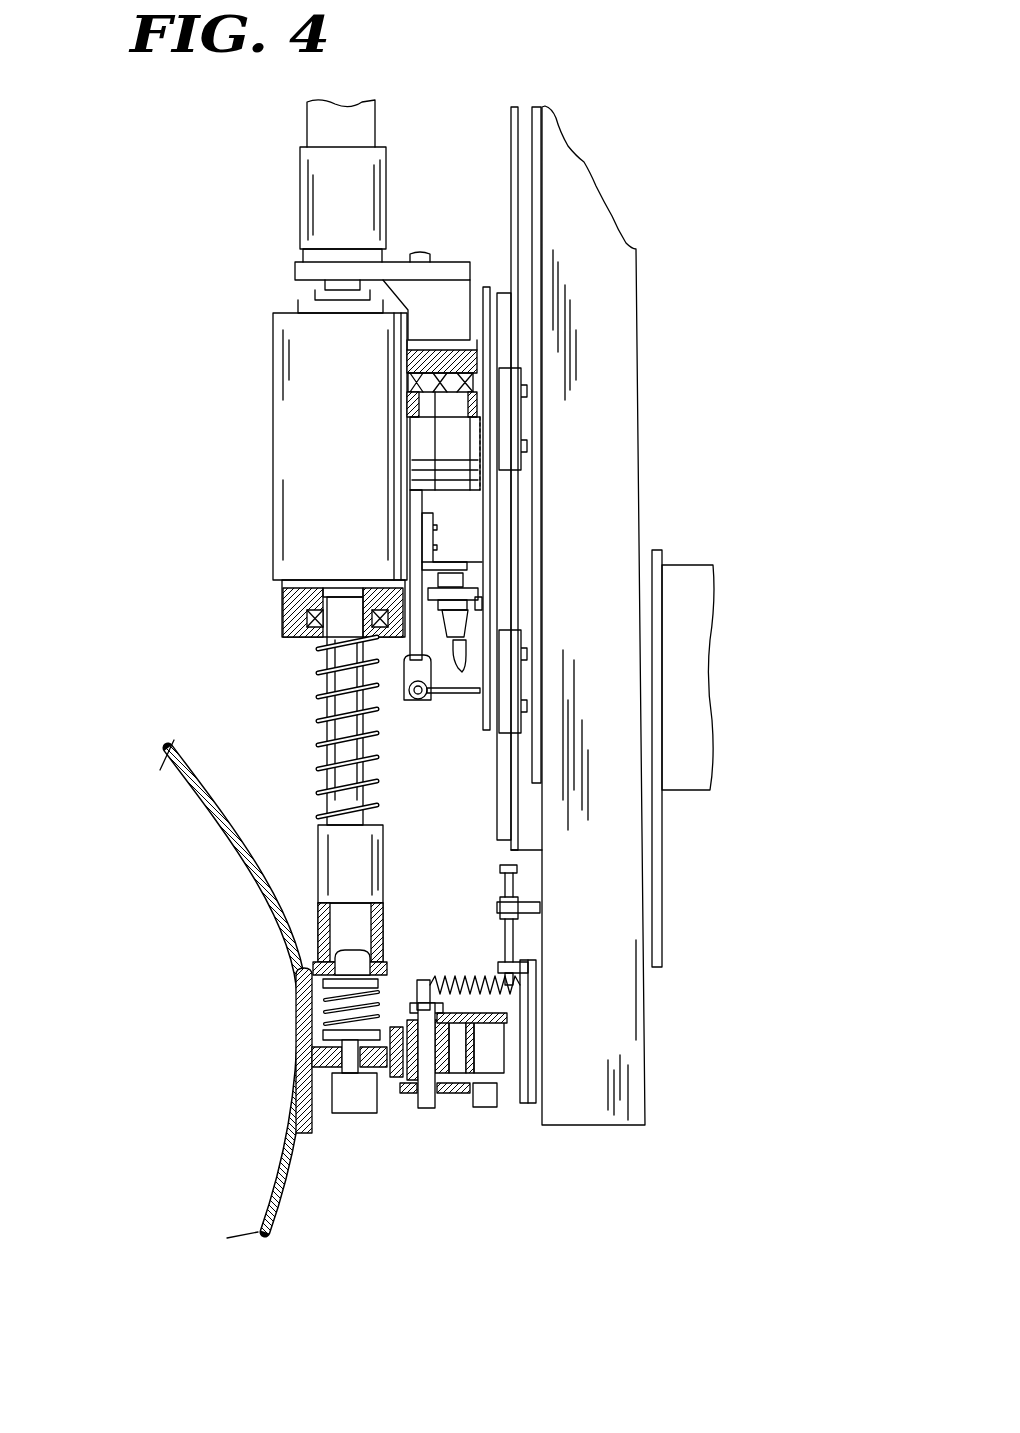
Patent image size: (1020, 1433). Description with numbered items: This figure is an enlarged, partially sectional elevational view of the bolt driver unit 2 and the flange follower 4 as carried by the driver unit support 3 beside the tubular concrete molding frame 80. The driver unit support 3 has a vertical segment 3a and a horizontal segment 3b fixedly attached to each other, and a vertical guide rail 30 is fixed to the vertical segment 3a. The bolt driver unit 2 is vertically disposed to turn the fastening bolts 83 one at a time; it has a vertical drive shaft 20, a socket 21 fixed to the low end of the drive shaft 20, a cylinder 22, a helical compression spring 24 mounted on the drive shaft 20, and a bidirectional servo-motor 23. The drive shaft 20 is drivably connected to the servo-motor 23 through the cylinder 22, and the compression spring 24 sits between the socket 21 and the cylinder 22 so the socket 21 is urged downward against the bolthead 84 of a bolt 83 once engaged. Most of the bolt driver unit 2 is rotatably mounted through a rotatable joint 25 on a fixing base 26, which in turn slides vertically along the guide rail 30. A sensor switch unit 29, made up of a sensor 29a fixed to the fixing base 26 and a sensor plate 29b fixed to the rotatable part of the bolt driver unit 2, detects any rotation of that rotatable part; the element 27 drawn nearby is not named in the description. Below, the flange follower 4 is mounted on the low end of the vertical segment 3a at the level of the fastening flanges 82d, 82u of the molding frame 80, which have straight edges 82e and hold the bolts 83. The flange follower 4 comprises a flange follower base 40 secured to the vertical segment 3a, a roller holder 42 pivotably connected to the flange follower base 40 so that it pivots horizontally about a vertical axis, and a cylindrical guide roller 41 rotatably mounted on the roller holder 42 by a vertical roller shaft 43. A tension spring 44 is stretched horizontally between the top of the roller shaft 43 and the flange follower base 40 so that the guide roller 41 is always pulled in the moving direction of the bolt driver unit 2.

The bolt driver unit 2 is at (240, 305).
The bidirectional servo-motor 23 is at (357, 170).
The vertical guide rail 30 is at (522, 168).
The fixing base 26 is at (488, 287).
The vertical segment 3a is at (613, 327).
The driver unit support 3 is at (645, 396).
The rotatable joint 25 is at (410, 402).
The cylinder 22 is at (295, 462).
The sensor plate 29b is at (450, 563).
The sensor 29a is at (470, 589).
The sensor switch unit 29 is at (443, 590).
The horizontal segment 3b is at (690, 665).
The vertical drive shaft 20 is at (318, 721).
The tubular concrete molding frame 80 is at (225, 815).
The pivot roller 27 is at (418, 700).
The helical compression spring 24 is at (320, 770).
The socket 21 is at (335, 860).
The tension spring 44 is at (463, 975).
The vertical roller shaft 43 is at (400, 1027).
The bolthead 84 is at (345, 955).
The fastening flange of the top frame segment 82u is at (298, 997).
The roller holder 42 is at (517, 1028).
The fastening bolt 83 is at (338, 1040).
The fastening flange of the bottom frame segment 82d is at (303, 1100).
The flange follower base 40 is at (510, 1068).
The straight edge 82e is at (380, 1077).
The cylindrical guide roller 41 is at (420, 1100).
The flange follower 4 is at (485, 1132).